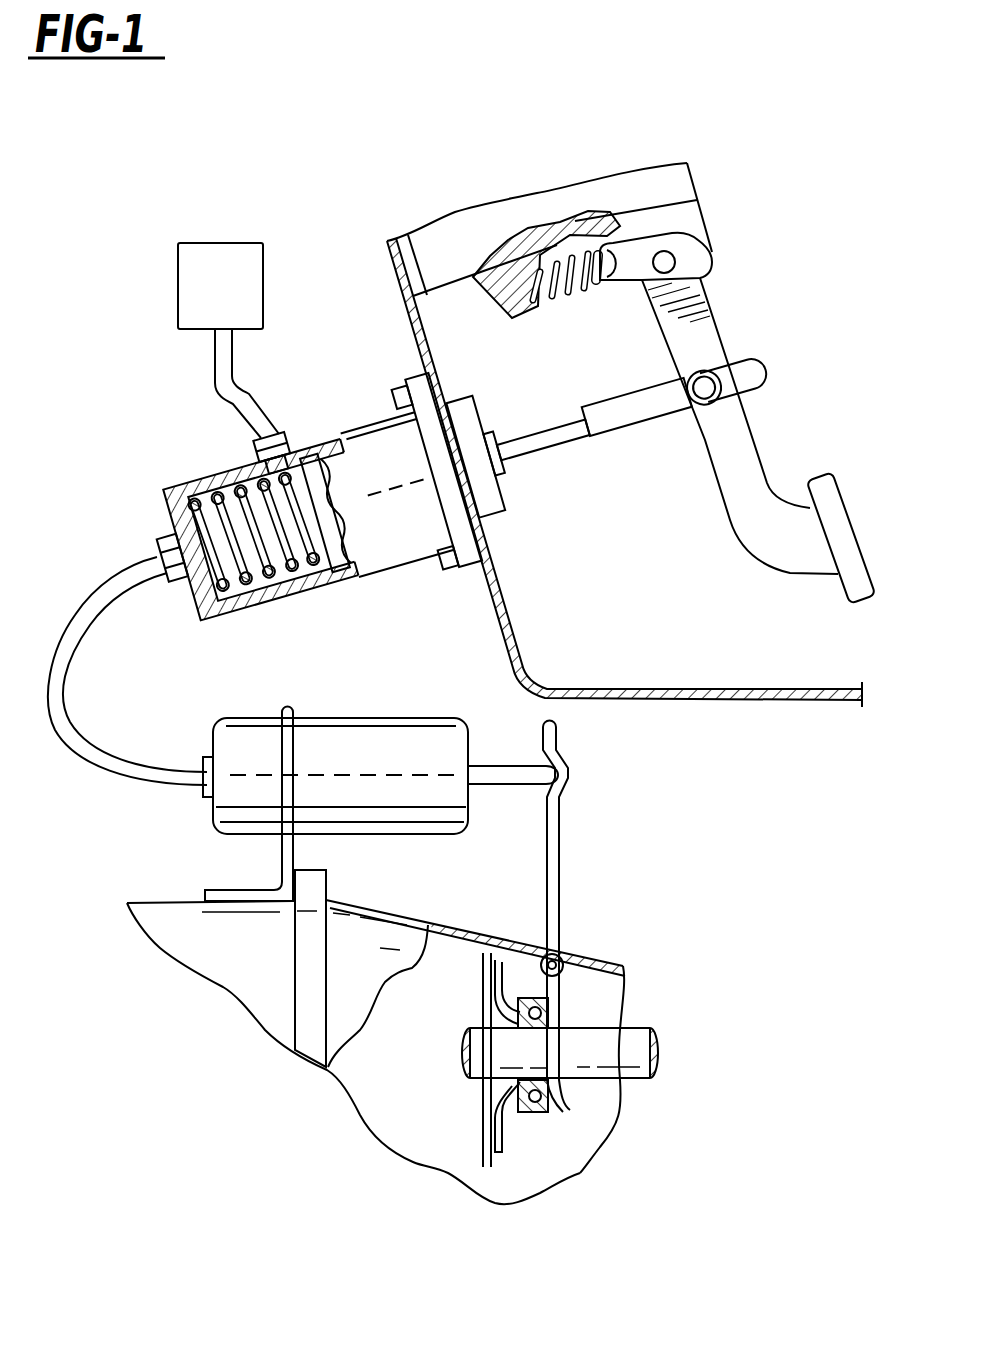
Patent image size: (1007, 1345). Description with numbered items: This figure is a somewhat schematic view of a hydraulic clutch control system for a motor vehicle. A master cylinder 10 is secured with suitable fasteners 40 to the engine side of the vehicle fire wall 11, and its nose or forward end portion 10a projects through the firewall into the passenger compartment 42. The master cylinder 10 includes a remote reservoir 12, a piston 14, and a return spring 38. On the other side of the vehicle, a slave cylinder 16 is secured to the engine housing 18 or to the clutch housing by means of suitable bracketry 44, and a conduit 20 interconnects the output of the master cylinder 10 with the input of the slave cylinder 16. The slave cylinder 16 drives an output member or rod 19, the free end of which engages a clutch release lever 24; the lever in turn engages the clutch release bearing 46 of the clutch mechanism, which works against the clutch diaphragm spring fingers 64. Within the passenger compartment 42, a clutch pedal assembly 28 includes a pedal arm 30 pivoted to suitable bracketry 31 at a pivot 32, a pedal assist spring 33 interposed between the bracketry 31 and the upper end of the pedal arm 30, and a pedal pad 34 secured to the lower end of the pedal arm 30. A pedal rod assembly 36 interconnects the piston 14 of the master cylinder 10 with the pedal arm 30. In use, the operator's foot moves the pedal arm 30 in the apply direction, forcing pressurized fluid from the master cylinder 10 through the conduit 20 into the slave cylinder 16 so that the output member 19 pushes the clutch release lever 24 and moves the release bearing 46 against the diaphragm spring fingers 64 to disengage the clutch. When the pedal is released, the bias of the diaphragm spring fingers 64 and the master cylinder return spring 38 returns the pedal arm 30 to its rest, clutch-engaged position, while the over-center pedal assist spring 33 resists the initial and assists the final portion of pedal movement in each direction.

The master cylinder 10 is at (168, 488).
The nose or forward end portion of the master cylinder 10a is at (453, 400).
The fire wall 11 is at (425, 402).
The remote reservoir 12 is at (247, 243).
The piston 14 is at (327, 437).
The slave cylinder 16 is at (425, 720).
The engine housing 18 is at (150, 903).
The output member or rod 19 is at (503, 767).
The conduit 20 is at (43, 645).
The clutch release lever 24 is at (559, 897).
The clutch pedal assembly 28 is at (775, 435).
The pedal arm 30 is at (712, 470).
The bracketry 31 is at (700, 207).
The pivot 32 is at (690, 250).
The pedal assist spring 33 is at (556, 235).
The pedal pad 34 is at (857, 522).
The pedal rod assembly 36 is at (630, 343).
The return spring 38 is at (228, 494).
The fasteners 40 is at (448, 556).
The passenger compartment 42 is at (672, 634).
The bracketry 44 is at (284, 703).
The clutch release bearing 46 is at (547, 1114).
The clutch diaphragm spring fingers 64 is at (480, 1100).